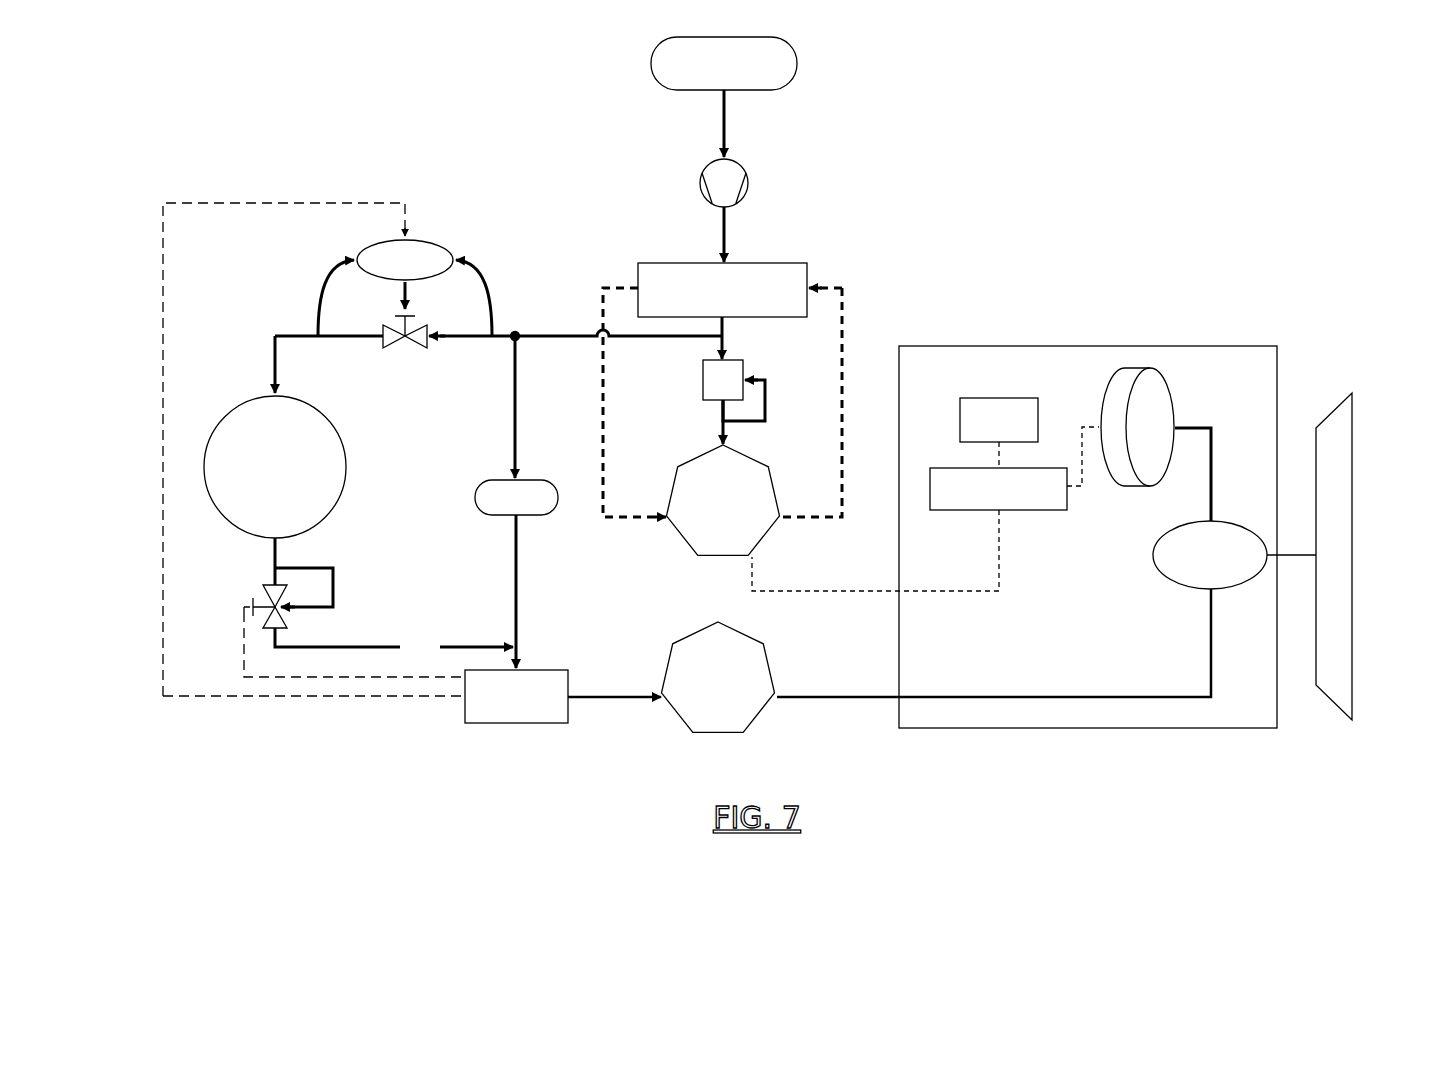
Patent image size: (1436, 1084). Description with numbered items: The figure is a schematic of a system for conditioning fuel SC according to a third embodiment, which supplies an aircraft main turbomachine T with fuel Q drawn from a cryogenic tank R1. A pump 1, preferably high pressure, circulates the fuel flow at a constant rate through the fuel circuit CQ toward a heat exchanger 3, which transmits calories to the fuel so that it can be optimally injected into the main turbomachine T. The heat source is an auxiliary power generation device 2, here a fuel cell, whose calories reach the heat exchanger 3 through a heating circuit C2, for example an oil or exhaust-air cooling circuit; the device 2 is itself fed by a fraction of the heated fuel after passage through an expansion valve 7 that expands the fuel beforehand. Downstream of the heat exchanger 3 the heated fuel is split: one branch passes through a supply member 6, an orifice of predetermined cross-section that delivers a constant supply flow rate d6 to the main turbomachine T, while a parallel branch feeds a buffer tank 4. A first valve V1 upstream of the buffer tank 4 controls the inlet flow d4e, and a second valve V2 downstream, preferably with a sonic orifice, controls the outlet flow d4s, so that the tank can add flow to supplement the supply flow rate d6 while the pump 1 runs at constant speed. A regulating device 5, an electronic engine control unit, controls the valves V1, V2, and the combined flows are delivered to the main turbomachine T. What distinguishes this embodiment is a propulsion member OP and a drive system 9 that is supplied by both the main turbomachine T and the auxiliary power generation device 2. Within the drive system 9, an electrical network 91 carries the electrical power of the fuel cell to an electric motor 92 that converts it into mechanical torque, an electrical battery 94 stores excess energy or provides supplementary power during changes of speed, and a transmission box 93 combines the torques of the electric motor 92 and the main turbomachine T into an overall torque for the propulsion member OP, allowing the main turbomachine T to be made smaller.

The pump 1 is at (748, 183).
The auxiliary power generation device 2 is at (723, 500).
The heat exchanger 3 is at (722, 290).
The buffer tank 4 is at (275, 467).
The regulating device 5 is at (516, 696).
The supply member 6 is at (516, 497).
The expansion valve 7 is at (786, 402).
The drive system 9 is at (1230, 346).
The electrical network 91 is at (998, 489).
The electric motor 92 is at (1172, 390).
The transmission box 93 is at (1210, 555).
The electrical battery 94 is at (999, 420).
The cryogenic tank R1 is at (797, 63).
The fuel circuit CQ is at (727, 238).
The heating circuit C2 is at (845, 325).
The system for conditioning fuel SC is at (516, 190).
The first valve V1 is at (418, 357).
The second valve V2 is at (248, 582).
The inlet flow d4e is at (498, 336).
The outlet flow d4s is at (394, 643).
The supply flow rate d6 is at (516, 591).
The main turbomachine T is at (718, 677).
The propulsion member OP is at (1352, 440).